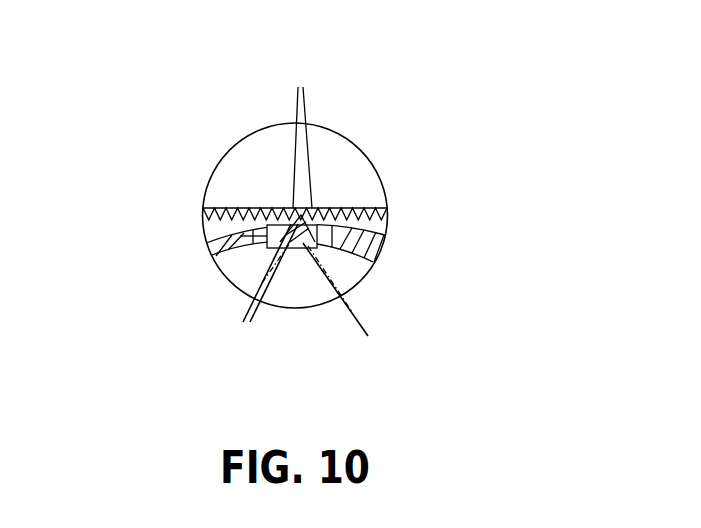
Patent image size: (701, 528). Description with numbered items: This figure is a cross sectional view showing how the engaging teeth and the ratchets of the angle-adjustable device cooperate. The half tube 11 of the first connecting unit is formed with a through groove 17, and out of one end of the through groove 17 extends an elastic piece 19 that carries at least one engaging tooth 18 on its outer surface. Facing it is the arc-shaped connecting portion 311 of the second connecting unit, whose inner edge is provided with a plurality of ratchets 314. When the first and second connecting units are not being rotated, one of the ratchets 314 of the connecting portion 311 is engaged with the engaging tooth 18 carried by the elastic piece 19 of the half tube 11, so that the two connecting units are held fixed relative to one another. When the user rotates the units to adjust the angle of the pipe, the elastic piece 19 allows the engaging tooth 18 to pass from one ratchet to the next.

The connecting portion 311 is at (343, 162).
The ratchets 314 is at (297, 135).
The through groove 17 is at (257, 233).
The half tube 11 is at (380, 247).
The engaging tooth 18 is at (261, 289).
The elastic piece 19 is at (345, 302).